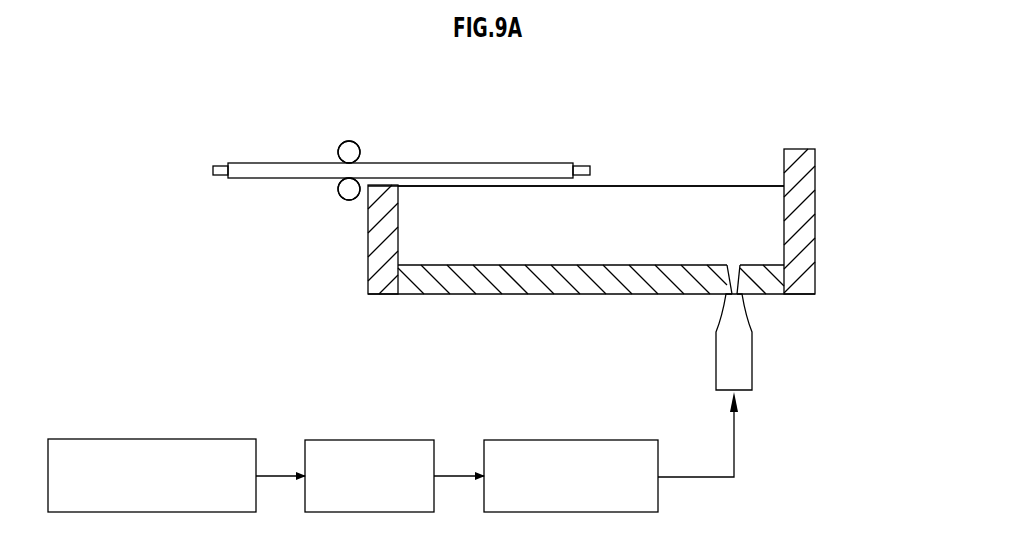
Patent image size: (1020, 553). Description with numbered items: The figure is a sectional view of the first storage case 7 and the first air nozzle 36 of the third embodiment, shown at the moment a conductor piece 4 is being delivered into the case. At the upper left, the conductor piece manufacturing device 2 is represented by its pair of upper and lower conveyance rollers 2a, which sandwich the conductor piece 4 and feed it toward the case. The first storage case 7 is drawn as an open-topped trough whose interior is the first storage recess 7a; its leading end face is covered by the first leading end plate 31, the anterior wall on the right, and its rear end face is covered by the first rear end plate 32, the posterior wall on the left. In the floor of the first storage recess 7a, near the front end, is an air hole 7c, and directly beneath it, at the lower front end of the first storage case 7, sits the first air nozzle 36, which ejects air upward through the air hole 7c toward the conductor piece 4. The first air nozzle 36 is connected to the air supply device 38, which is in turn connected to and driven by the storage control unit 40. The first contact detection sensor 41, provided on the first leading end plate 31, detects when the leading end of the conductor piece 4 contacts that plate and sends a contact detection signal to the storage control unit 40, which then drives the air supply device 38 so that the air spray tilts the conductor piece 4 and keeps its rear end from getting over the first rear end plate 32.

The conductor piece manufacturing device 2 is at (335, 142).
The conveyance rollers 2a is at (352, 150).
The conductor piece 4 is at (513, 163).
The first storage case 7 is at (683, 185).
The first storage recess 7a is at (618, 198).
The air hole 7c is at (735, 265).
The first leading end plate 31 is at (798, 149).
The first rear end plate 32 is at (377, 235).
The first air nozzle 36 is at (752, 358).
The air supply device 38 is at (570, 440).
The storage control unit 40 is at (368, 440).
The first contact detection sensor 41 is at (148, 439).